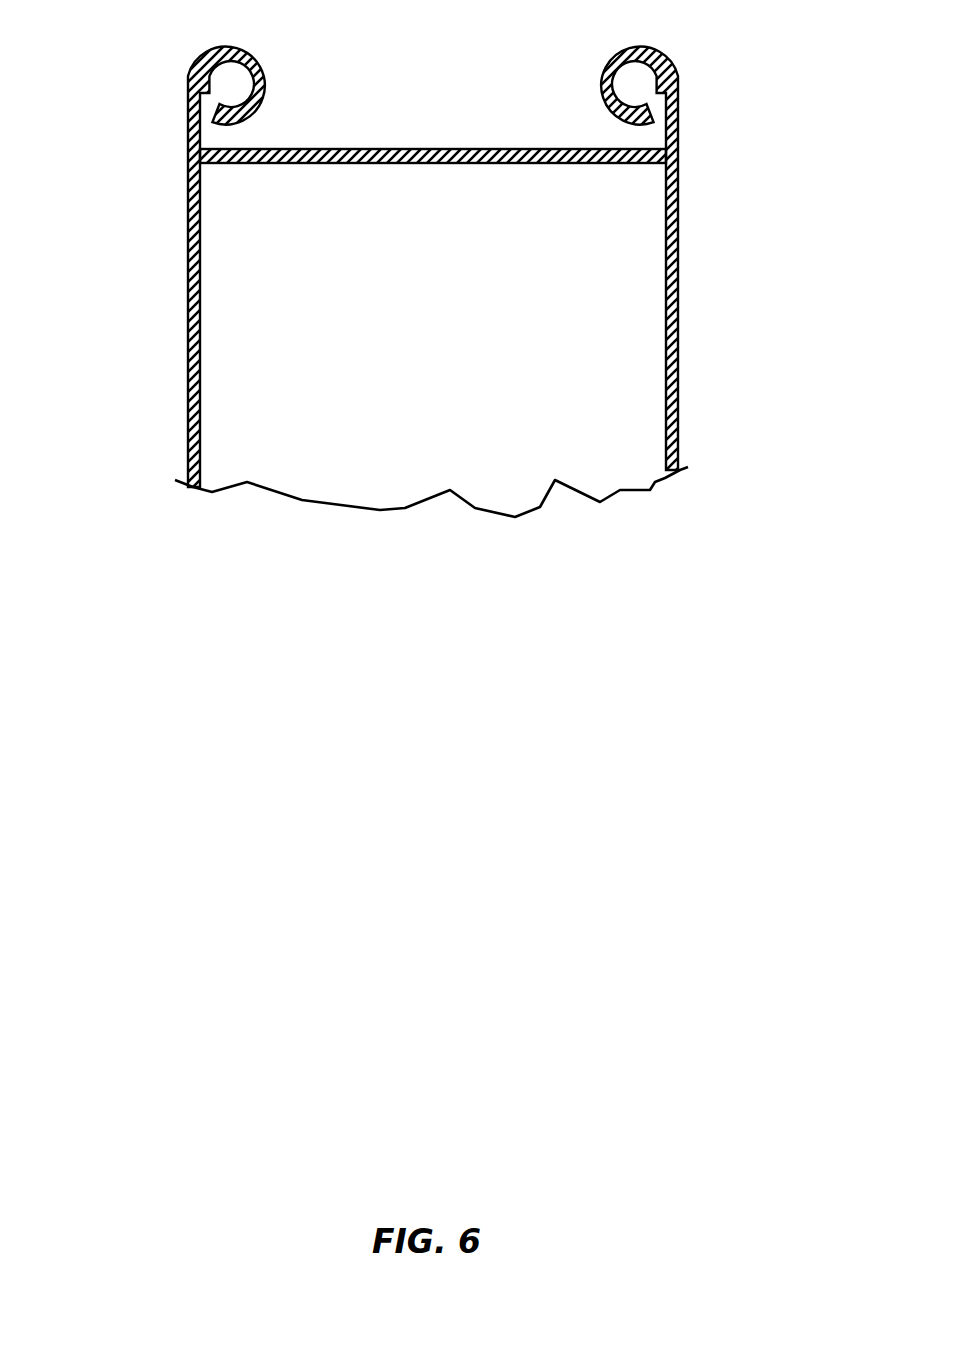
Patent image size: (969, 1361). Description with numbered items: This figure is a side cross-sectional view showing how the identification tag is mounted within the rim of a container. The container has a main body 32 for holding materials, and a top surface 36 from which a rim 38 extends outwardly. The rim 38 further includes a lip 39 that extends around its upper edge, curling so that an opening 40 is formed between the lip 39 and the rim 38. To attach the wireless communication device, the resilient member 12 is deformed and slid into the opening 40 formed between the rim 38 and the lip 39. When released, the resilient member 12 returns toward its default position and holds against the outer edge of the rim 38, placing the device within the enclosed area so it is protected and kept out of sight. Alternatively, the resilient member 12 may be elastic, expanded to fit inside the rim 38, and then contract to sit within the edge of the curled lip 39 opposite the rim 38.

The resilient member 12 is at (193, 72).
The main body 32 is at (235, 272).
The top surface 36 is at (330, 148).
The rim 38 is at (187, 125).
The lip 39 is at (220, 47).
The opening 40 is at (219, 142).